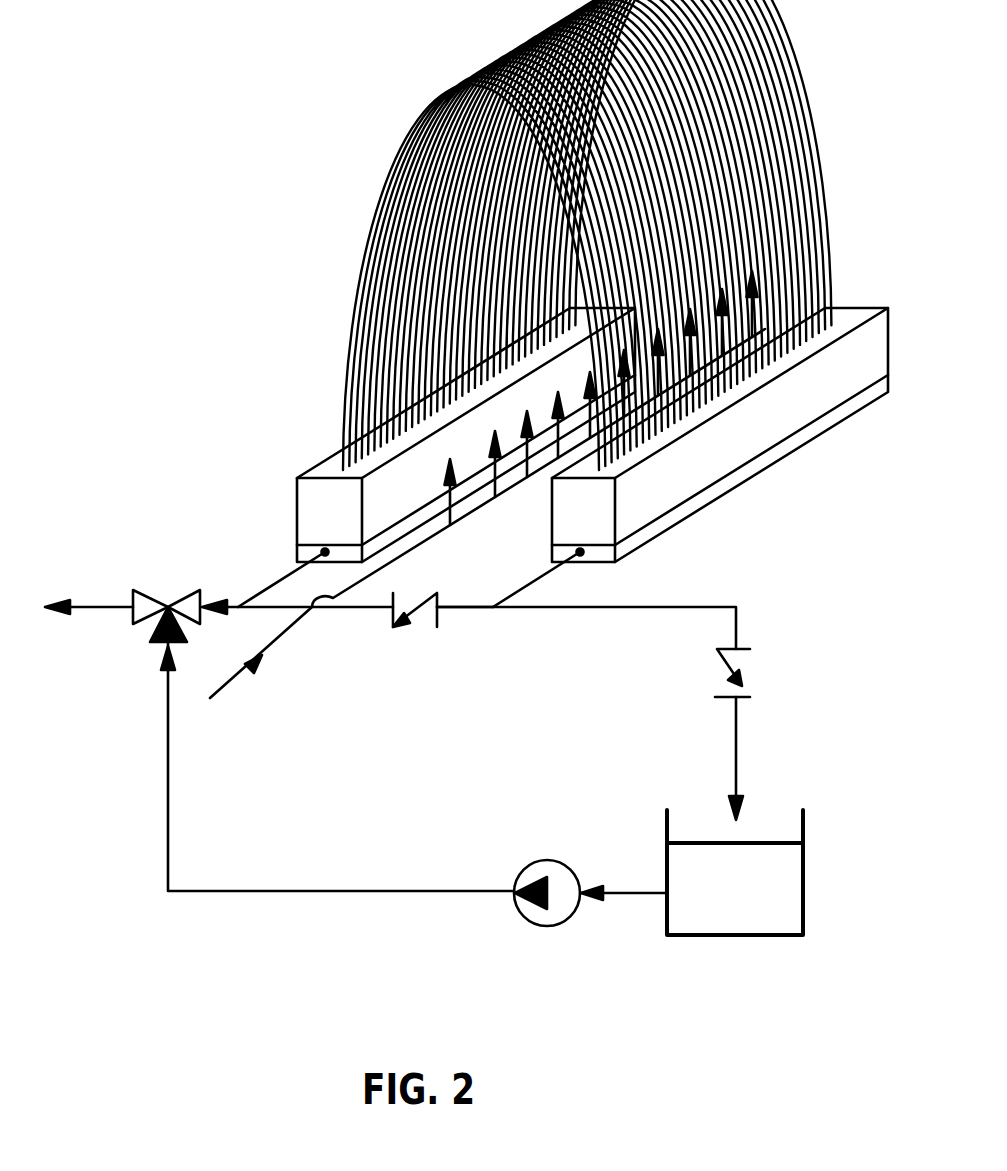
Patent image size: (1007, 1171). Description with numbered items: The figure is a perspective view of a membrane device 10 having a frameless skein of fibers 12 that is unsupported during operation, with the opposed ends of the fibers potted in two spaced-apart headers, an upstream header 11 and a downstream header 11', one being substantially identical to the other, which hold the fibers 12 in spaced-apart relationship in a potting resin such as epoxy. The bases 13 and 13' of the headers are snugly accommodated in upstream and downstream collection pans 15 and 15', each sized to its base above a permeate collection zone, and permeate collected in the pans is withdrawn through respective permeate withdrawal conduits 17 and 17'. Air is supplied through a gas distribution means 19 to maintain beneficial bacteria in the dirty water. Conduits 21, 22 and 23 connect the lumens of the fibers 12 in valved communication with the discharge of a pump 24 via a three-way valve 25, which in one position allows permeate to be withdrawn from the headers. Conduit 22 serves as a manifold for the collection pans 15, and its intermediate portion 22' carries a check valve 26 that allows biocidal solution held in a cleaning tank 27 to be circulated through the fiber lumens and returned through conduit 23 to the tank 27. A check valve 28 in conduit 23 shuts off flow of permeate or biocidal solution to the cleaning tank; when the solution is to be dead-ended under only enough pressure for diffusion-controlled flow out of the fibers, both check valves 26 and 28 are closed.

The membrane device 10 is at (362, 292).
The upstream header 11 is at (434, 435).
The downstream header 11' is at (720, 435).
The fibers 12 is at (447, 88).
The base of upstream header 13 is at (498, 460).
The base of downstream header 13' is at (751, 460).
The upstream collection pan 15 is at (292, 551).
The downstream collection pan 15' is at (627, 542).
The permeate withdrawal conduit 17 is at (281, 579).
The permeate withdrawal conduit 17' is at (536, 579).
The gas distribution means 19 is at (440, 528).
The conduit 21 is at (220, 890).
The conduit 22 is at (469, 629).
The intermediate portion of conduit 22' is at (481, 629).
The conduit 23 is at (736, 740).
The pump 24 is at (553, 863).
The 3-way valve 25 is at (173, 603).
The check valve 26 is at (430, 620).
The cleaning tank 27 is at (805, 873).
The check valve 28 is at (740, 658).